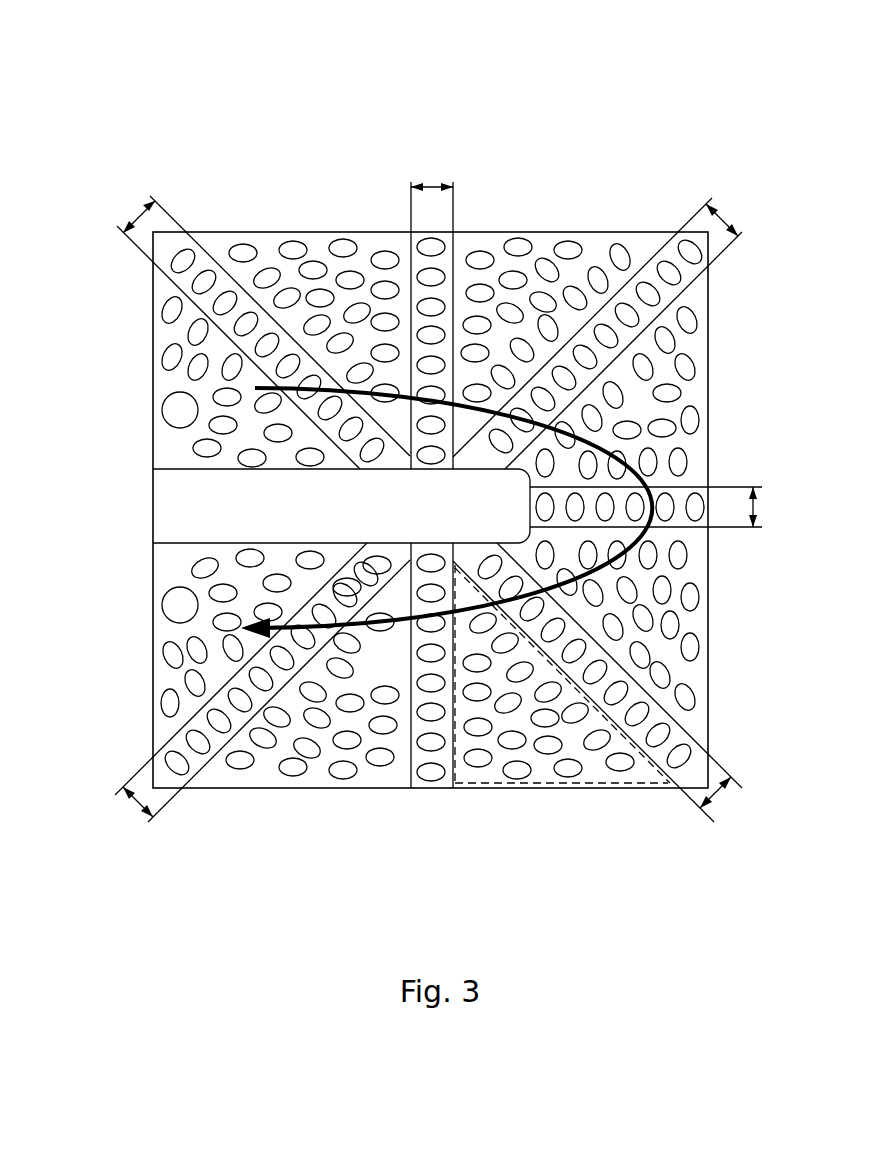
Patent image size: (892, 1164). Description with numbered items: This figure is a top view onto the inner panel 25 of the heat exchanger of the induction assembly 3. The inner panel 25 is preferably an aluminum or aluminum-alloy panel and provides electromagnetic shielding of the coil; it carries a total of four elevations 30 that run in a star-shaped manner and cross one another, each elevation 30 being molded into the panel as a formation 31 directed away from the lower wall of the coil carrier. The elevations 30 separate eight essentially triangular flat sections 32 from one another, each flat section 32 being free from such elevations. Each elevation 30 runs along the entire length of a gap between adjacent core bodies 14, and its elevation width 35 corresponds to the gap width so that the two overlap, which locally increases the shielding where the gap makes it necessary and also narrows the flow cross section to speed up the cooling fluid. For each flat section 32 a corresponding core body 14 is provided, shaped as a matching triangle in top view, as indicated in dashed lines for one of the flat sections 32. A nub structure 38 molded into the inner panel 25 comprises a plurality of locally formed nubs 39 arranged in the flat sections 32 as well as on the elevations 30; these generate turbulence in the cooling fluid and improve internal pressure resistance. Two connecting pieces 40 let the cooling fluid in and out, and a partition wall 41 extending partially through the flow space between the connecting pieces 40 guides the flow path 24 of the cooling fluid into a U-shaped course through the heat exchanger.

The induction assembly 3 is at (756, 112).
The core body 14 is at (638, 790).
The flow path 24 is at (655, 534).
The inner panel 25 is at (722, 690).
The elevation 30 is at (405, 245).
The formation 31 is at (445, 462).
The flat section 32 is at (318, 242).
The elevation width 35 is at (430, 184).
The nub structure 38 is at (258, 238).
The nub 39 is at (352, 748).
The connecting piece 40 is at (175, 415).
The partition wall 41 is at (335, 516).